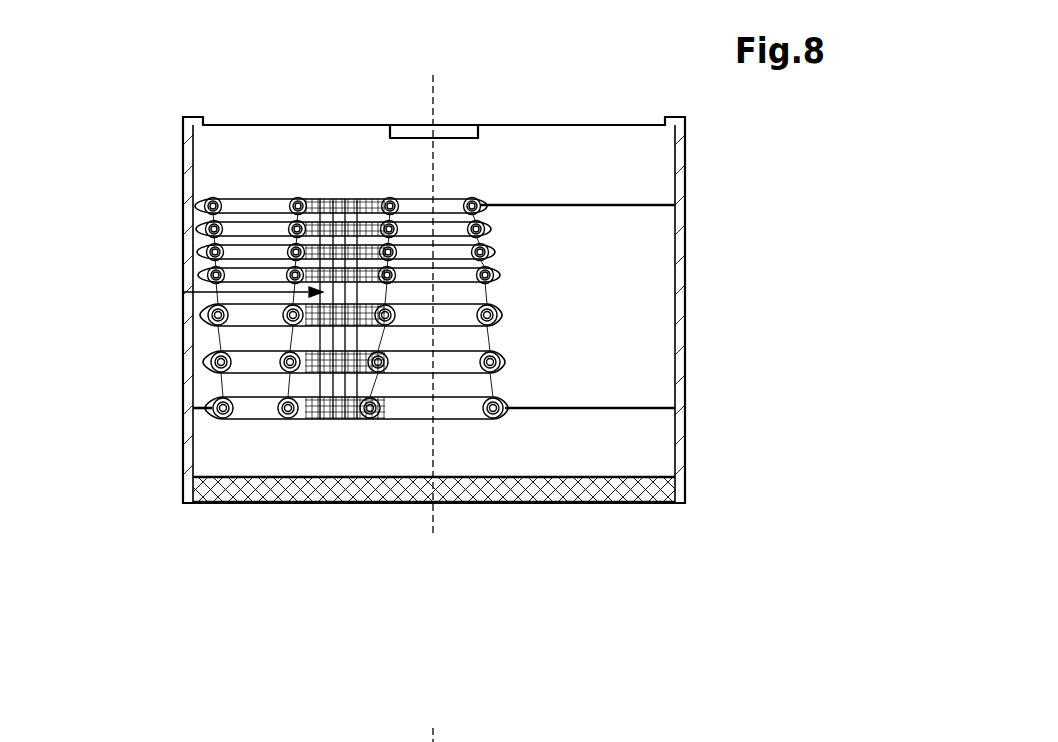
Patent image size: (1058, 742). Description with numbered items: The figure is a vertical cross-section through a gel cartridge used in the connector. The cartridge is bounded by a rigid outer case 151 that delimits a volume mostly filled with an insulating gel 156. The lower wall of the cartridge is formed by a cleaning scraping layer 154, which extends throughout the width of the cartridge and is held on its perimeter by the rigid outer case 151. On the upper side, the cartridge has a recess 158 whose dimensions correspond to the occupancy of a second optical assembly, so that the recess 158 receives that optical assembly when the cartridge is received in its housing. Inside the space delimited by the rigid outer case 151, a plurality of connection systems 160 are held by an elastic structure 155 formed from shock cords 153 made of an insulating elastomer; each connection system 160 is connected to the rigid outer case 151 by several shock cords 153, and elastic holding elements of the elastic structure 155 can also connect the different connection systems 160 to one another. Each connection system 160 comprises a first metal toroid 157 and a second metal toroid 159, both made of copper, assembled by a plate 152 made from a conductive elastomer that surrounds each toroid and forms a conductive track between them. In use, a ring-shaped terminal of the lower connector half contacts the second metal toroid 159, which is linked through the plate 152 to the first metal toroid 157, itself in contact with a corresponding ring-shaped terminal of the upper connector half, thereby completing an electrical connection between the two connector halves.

The rigid outer case 151 is at (687, 182).
The plate made from a conductive elastomer 152 is at (337, 420).
The shock cords 153 is at (648, 410).
The cleaning scraping layer 154 is at (562, 493).
The elastic structure 155 is at (183, 292).
The insulating gel 156 is at (650, 318).
The first metal toroid 157 is at (232, 418).
The recess 158 is at (458, 130).
The second metal toroid 159 is at (380, 416).
The connection system 160 is at (207, 398).